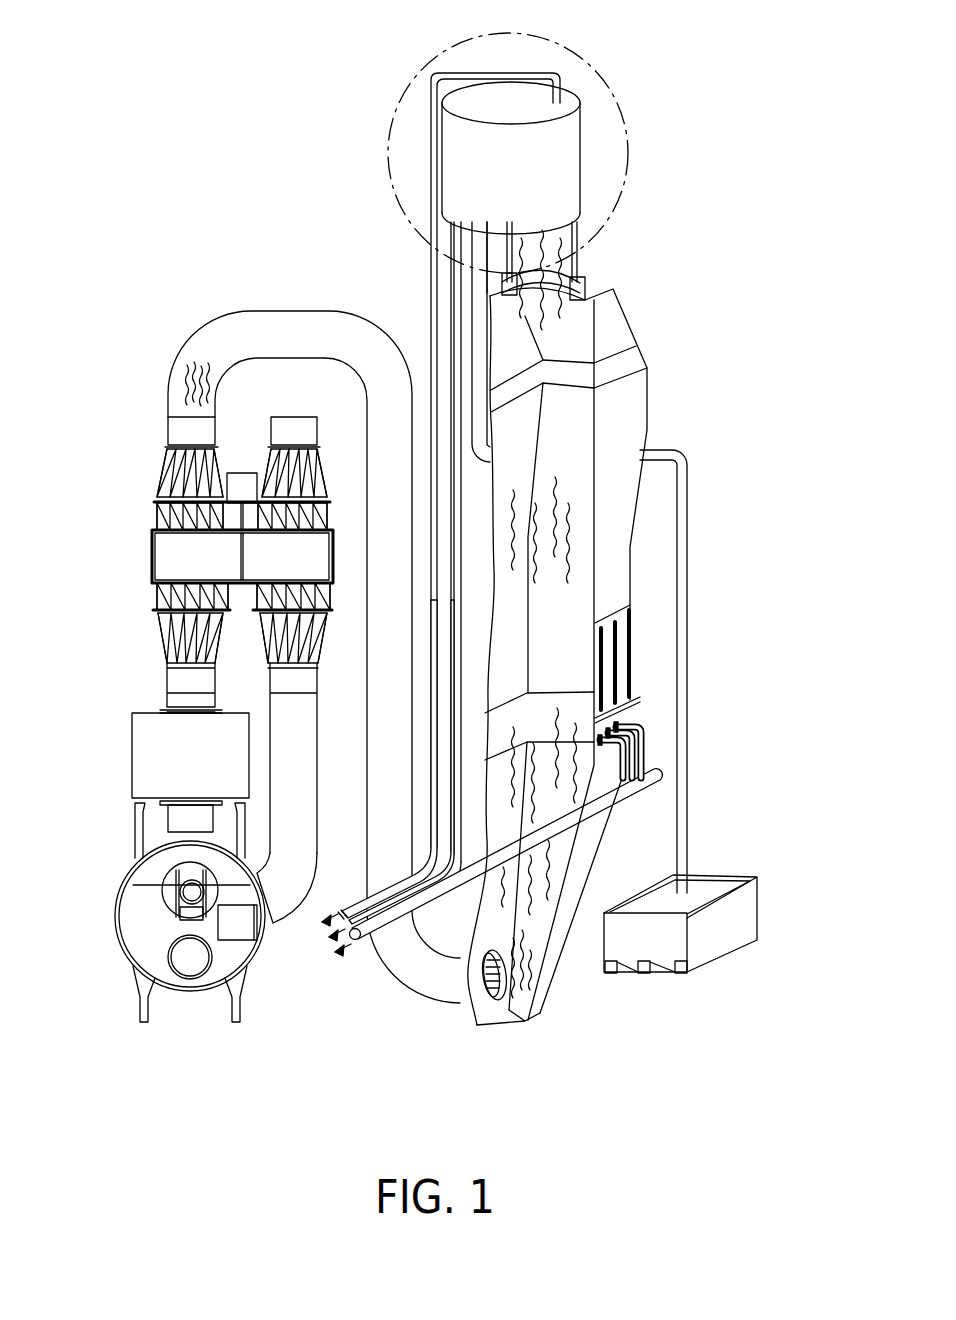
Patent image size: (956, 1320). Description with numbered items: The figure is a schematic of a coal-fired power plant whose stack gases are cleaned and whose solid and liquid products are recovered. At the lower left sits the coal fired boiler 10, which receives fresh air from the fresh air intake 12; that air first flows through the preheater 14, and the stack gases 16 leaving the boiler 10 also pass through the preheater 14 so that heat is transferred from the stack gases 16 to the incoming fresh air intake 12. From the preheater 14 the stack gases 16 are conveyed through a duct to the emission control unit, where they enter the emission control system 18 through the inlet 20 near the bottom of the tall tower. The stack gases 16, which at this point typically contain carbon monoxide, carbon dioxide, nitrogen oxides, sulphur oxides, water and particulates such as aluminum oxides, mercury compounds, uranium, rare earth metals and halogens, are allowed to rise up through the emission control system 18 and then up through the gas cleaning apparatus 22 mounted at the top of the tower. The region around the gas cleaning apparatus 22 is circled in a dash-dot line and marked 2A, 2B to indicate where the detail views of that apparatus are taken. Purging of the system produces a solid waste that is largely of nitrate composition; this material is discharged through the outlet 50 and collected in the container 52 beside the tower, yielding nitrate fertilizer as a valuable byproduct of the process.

The detail region shown in FIGS. 2A and 2B 2A is at (599, 152).
The detail region shown in FIGS. 2A and 2B is at (613, 93).
The coal fired boiler 10 is at (122, 895).
The fresh air intake 12 is at (295, 418).
The preheater 14 is at (152, 557).
The stack gases 16 is at (186, 373).
The emission control system 18 is at (633, 708).
The inlet 20 is at (473, 1003).
The gas cleaning apparatus 22 is at (578, 160).
The outlet 50 is at (481, 285).
The container 52 is at (758, 898).